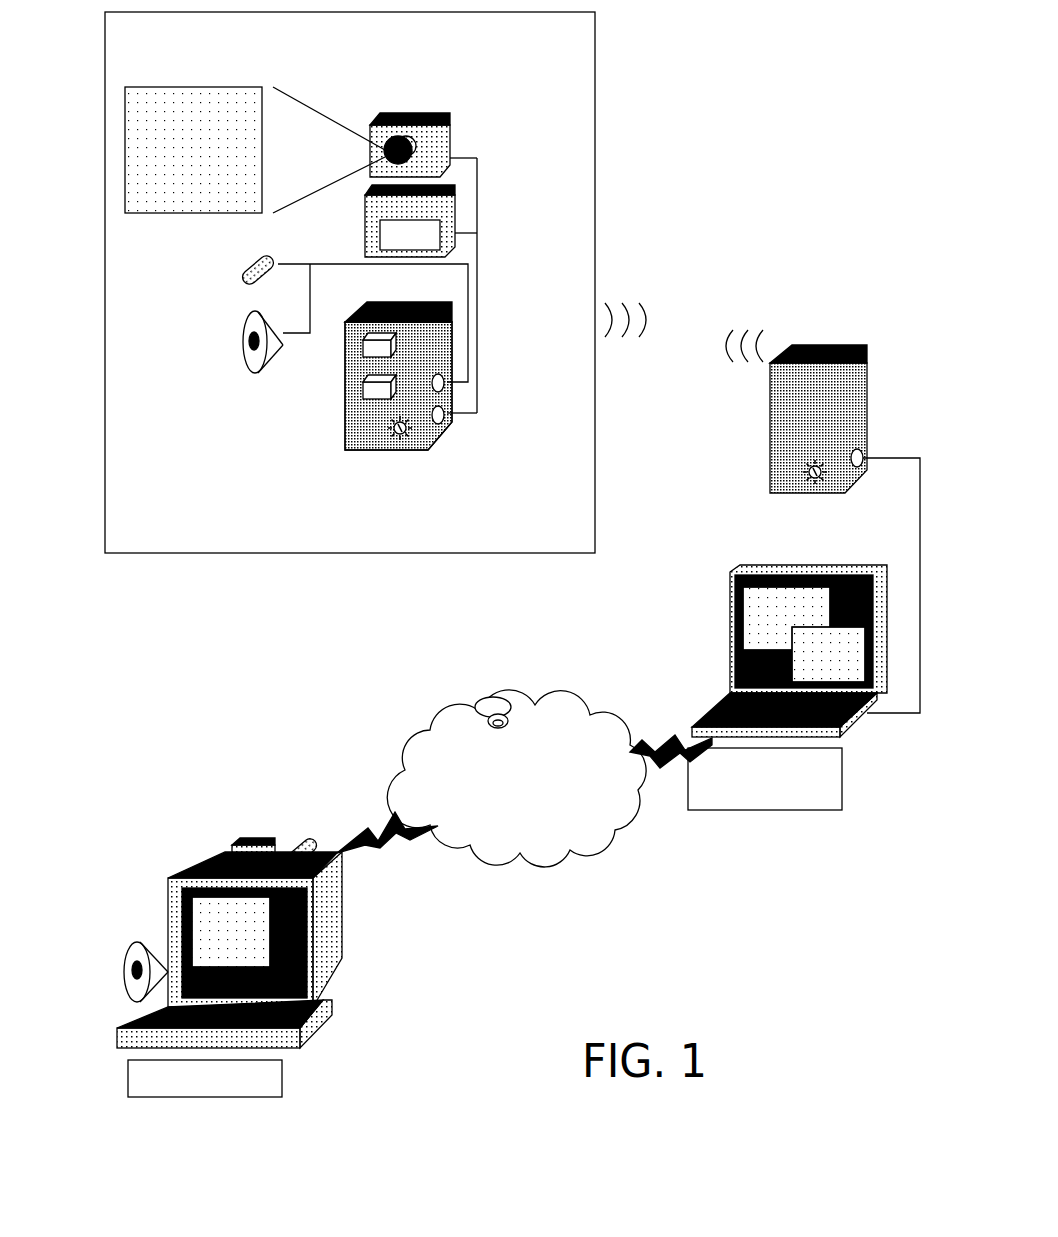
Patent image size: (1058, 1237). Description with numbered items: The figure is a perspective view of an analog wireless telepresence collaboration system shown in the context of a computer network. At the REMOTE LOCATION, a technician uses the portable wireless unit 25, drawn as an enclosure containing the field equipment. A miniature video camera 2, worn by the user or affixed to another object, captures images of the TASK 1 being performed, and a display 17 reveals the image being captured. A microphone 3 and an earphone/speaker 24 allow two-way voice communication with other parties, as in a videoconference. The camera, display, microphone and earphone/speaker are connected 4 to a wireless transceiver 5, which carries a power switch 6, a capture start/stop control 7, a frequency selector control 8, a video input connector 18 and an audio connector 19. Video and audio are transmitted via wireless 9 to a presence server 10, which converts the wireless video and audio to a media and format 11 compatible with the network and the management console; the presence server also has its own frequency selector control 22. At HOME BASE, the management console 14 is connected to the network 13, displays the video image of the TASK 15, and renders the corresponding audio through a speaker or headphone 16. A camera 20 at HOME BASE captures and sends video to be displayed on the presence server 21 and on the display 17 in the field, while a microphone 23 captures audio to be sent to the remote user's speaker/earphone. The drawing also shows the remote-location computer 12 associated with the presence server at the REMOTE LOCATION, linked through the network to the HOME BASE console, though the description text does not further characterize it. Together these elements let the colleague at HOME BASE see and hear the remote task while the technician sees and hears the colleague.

The TASK 1 is at (190, 95).
The miniature video camera 2 is at (410, 113).
The microphone 3 is at (237, 278).
The connection 4 is at (477, 292).
The wireless transceiver 5 is at (420, 348).
The power switch 6 is at (372, 345).
The capture start/stop control 7 is at (373, 388).
The frequency selector control 8 is at (393, 437).
The wireless 9 is at (652, 310).
The presence server 10 is at (825, 345).
The media and format 11 is at (920, 534).
The remote location computer 12 is at (743, 687).
The network 13 is at (548, 810).
The management console 14 is at (207, 945).
The TASK 15 is at (222, 933).
The speaker or headphone 16 is at (127, 968).
The display 17 is at (455, 212).
The video input connector 18 is at (447, 388).
The audio connector 19 is at (450, 425).
The camera 20 is at (253, 842).
The presence server display 21 is at (752, 630).
The frequency selector control 22 is at (808, 480).
The microphone 23 is at (307, 858).
The earphone/speaker 24 is at (247, 341).
The portable wireless unit 25 is at (595, 70).